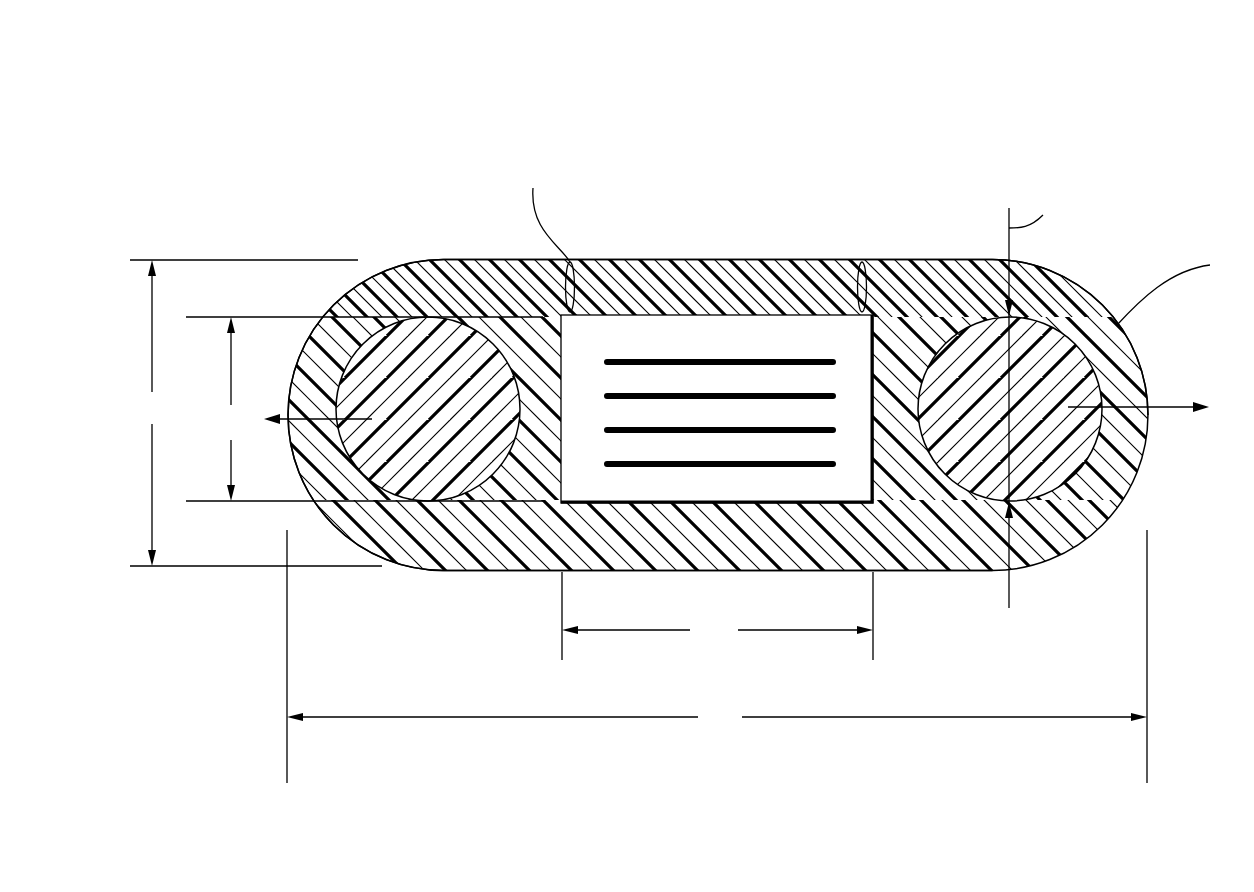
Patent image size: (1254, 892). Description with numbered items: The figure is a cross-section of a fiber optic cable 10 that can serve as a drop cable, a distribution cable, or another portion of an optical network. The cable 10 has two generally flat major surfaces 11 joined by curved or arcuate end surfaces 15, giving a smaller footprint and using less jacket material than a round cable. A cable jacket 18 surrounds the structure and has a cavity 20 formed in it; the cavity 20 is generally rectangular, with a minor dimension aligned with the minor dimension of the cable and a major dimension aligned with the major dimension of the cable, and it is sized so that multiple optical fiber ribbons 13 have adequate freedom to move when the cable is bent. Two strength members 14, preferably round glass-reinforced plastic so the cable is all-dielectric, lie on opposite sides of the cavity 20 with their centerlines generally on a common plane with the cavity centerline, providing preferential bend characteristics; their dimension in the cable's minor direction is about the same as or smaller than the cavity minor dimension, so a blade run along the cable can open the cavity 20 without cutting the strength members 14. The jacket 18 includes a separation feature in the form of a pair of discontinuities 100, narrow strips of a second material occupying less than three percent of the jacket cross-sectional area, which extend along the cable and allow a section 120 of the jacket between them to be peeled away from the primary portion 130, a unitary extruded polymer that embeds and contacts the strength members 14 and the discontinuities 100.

The fiber optic cable 10 is at (339, 96).
The major surfaces 11 is at (950, 258).
The optical fiber ribbon 13 is at (760, 393).
The strength members 14 is at (424, 322).
The end surfaces 15 is at (338, 296).
The cable jacket 18 is at (420, 560).
The cavity 20 is at (657, 270).
The discontinuities 100 is at (583, 250).
The section of the jacket 120 is at (732, 236).
The primary portion of the jacket 130 is at (924, 557).